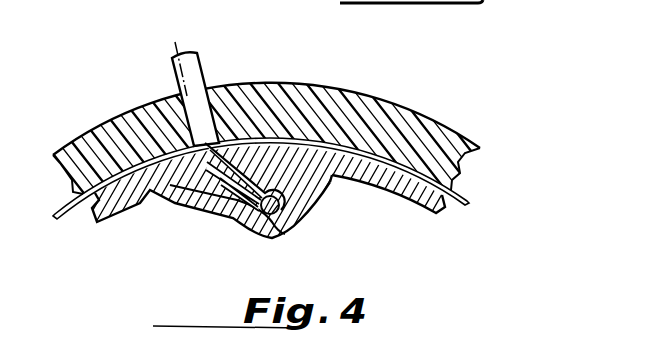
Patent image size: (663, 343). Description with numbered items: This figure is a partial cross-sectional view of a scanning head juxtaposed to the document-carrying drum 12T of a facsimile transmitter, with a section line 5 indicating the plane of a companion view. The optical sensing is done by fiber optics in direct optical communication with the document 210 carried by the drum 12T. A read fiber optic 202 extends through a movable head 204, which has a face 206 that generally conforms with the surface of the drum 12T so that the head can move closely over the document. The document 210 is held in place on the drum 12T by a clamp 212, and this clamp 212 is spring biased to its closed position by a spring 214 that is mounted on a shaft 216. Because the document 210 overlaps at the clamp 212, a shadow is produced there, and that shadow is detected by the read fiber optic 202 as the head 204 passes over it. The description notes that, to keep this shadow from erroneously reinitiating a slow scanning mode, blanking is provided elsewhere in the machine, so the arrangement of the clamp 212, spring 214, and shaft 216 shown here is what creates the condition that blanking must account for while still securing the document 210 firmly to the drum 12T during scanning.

The read fiber optic 202 is at (190, 75).
The movable head 204 is at (322, 102).
The face 206 is at (402, 182).
The document 210 is at (468, 192).
The clamp 212 is at (203, 176).
The spring 214 is at (233, 202).
The shaft 216 is at (281, 236).
The drum 12T is at (311, 182).
The section line 5- 5 is at (168, 10).